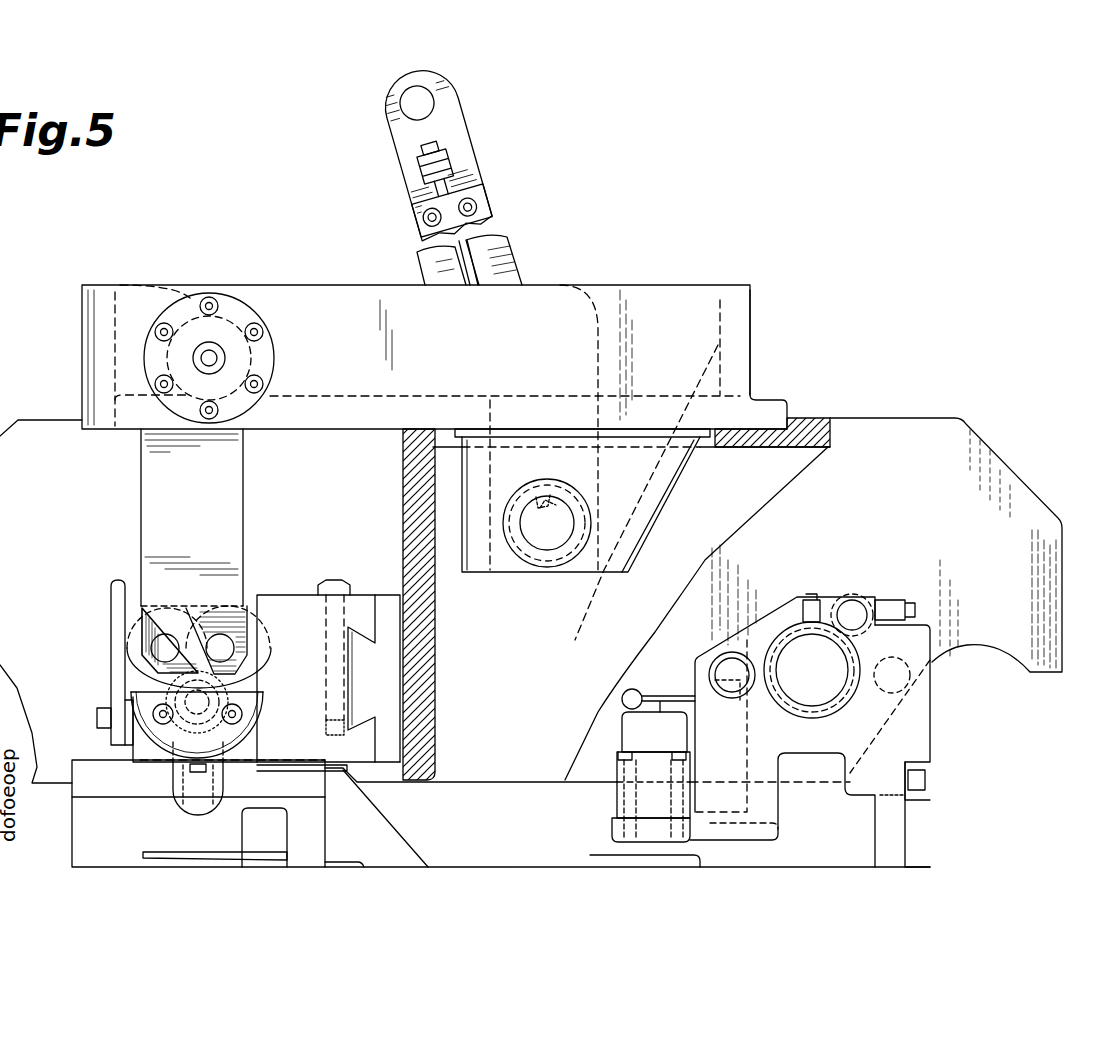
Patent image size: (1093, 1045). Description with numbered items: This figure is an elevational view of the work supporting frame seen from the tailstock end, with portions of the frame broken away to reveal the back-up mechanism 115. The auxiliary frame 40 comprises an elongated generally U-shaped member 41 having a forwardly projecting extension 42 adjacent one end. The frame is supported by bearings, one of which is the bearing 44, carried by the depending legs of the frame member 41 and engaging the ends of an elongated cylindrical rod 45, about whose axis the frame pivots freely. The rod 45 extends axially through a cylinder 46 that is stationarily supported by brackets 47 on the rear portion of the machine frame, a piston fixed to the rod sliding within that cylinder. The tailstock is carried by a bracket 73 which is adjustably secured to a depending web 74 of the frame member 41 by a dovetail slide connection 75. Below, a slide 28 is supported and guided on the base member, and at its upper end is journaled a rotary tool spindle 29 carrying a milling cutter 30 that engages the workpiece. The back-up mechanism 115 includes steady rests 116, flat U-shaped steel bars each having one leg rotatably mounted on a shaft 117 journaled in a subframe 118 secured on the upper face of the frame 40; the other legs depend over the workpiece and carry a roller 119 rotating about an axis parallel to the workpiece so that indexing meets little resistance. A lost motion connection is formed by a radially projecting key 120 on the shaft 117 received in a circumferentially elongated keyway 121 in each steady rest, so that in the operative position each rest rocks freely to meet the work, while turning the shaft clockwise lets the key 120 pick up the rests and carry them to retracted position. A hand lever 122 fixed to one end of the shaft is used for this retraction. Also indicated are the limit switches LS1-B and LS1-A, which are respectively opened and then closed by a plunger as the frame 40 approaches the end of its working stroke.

The slide 28 is at (78, 830).
The rotary tool spindle 29 is at (187, 804).
The milling cutter 30 is at (235, 735).
The auxiliary frame 40 is at (812, 416).
The U-shaped member 41 is at (992, 470).
The forwardly projecting extension 42 is at (40, 428).
The bearing 44 is at (800, 730).
The cylindrical rod 45 is at (827, 696).
The cylinder 46 is at (918, 722).
The brackets 47 is at (920, 795).
The bracket 73 is at (292, 598).
The depending web 74 is at (432, 673).
The dovetail slide connection 75 is at (366, 620).
The back-up mechanism 115 is at (246, 278).
The steady rests 116 is at (434, 431).
The shaft 117 is at (582, 515).
The subframe 118 is at (745, 338).
The roller 119 is at (132, 652).
The key 120 is at (575, 488).
The keyway 121 is at (542, 486).
The hand lever 122 is at (463, 142).
The limit switch LS1A LS1-A is at (624, 726).
The limit switch LS1B LS1-B is at (609, 751).